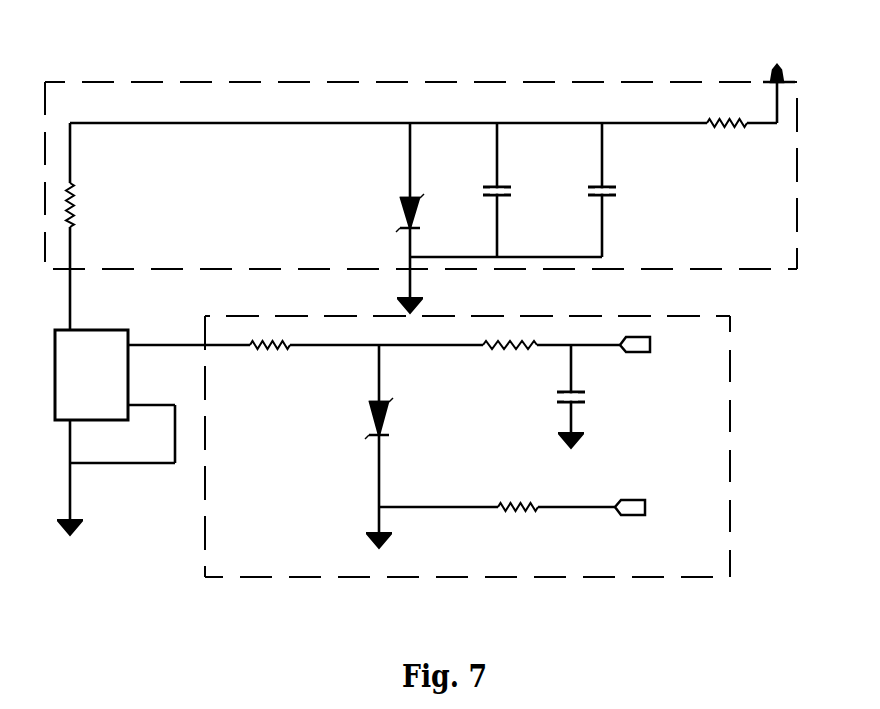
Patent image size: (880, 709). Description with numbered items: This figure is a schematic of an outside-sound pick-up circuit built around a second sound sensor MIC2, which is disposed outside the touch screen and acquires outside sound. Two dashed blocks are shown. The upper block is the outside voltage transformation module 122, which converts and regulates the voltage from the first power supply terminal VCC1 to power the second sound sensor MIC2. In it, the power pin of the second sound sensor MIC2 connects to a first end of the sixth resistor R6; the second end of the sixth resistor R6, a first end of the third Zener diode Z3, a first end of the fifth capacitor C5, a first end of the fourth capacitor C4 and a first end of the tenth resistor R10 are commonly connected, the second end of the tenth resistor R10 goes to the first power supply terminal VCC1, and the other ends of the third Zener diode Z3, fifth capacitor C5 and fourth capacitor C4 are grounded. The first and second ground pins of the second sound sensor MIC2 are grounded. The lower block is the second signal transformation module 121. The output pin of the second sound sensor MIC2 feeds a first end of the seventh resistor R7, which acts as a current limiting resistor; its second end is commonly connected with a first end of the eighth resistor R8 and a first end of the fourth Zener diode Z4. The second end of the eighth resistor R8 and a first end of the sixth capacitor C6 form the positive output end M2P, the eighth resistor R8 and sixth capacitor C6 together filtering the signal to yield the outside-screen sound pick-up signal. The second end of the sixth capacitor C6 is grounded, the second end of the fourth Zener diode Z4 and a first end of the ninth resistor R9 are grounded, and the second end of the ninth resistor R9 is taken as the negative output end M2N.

The outside voltage transformation module 122 is at (380, 80).
The second signal transformation module 121 is at (730, 455).
The sixth resistor R6 is at (90, 205).
The seventh resistor R7 is at (270, 359).
The eighth resistor R8 is at (509, 359).
The ninth resistor R9 is at (517, 493).
The tenth resistor R10 is at (726, 108).
The fourth capacitor C4 is at (592, 208).
The fifth capacitor C5 is at (484, 205).
The sixth capacitor C6 is at (555, 401).
The third Zener diode Z3 is at (393, 213).
The fourth Zener diode Z4 is at (398, 425).
The second sound sensor MIC2 is at (97, 355).
The first power supply terminal VCC1 is at (771, 53).
The positive output end M2P is at (664, 343).
The negative output end M2N is at (660, 508).